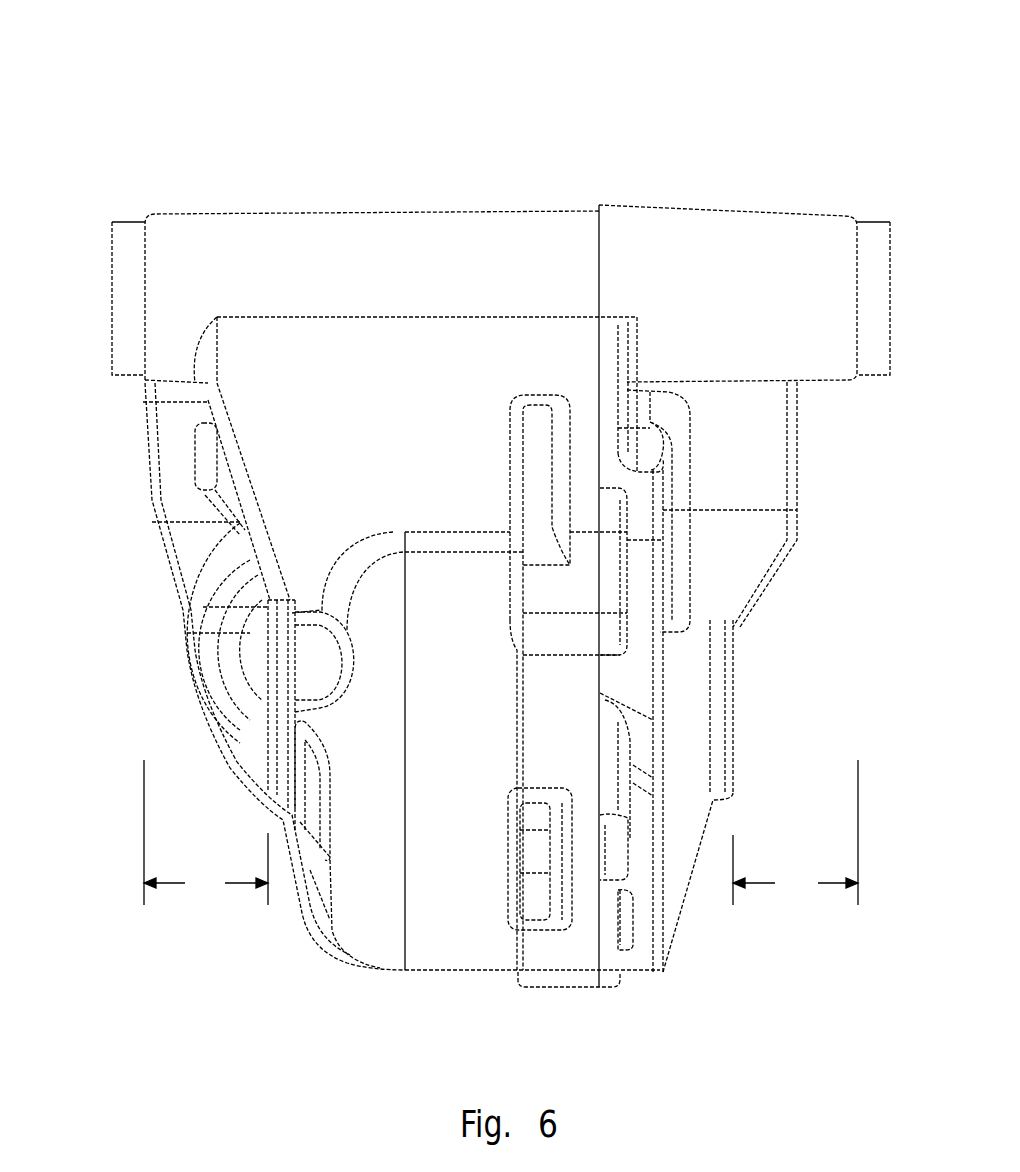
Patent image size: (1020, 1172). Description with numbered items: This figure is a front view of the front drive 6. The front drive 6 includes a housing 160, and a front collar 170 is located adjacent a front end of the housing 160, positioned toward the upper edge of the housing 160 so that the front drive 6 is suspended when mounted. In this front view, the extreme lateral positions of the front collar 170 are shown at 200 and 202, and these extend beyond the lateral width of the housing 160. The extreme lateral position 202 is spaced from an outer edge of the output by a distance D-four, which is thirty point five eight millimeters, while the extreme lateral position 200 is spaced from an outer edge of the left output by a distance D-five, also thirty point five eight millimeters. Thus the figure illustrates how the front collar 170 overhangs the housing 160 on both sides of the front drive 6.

The front drive 6 is at (877, 125).
The front collar 170 is at (443, 210).
The extreme lateral position 200 is at (112, 252).
The extreme lateral position 202 is at (860, 330).
The housing 160 is at (668, 693).